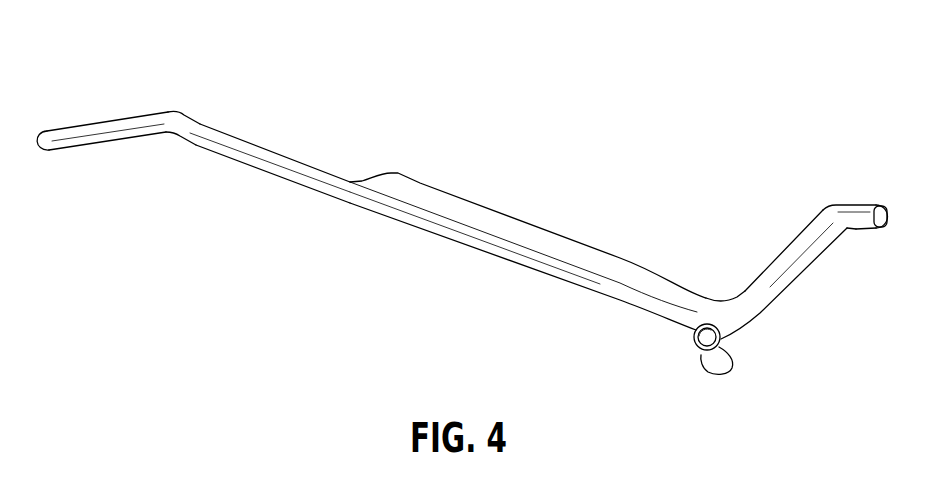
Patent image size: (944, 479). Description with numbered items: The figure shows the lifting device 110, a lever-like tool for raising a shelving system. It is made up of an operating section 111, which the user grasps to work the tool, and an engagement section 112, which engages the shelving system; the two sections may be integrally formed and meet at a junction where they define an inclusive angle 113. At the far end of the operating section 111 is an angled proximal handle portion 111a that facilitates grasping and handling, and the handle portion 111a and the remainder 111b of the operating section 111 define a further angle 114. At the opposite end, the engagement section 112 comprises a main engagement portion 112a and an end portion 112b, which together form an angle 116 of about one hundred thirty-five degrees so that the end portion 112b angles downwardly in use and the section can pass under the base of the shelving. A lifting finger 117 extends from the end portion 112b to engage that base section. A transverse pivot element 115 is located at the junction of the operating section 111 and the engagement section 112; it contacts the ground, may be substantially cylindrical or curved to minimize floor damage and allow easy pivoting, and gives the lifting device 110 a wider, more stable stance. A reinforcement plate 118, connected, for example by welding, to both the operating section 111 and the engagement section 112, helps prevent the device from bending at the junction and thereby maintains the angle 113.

The lifting device 110 is at (473, 300).
The operating section 111 is at (295, 48).
The handle portion 111a is at (139, 130).
The remainder of the operating section 111b is at (340, 187).
The engagement section 112 is at (883, 122).
The main engagement portion 112a is at (796, 248).
The end portion 112b is at (852, 214).
The angle 113 is at (707, 293).
The angle 114 is at (165, 148).
The pivot element 115 is at (712, 360).
The angle 116 is at (843, 243).
The lifting finger 117 is at (883, 218).
The reinforcement plate 118 is at (430, 202).